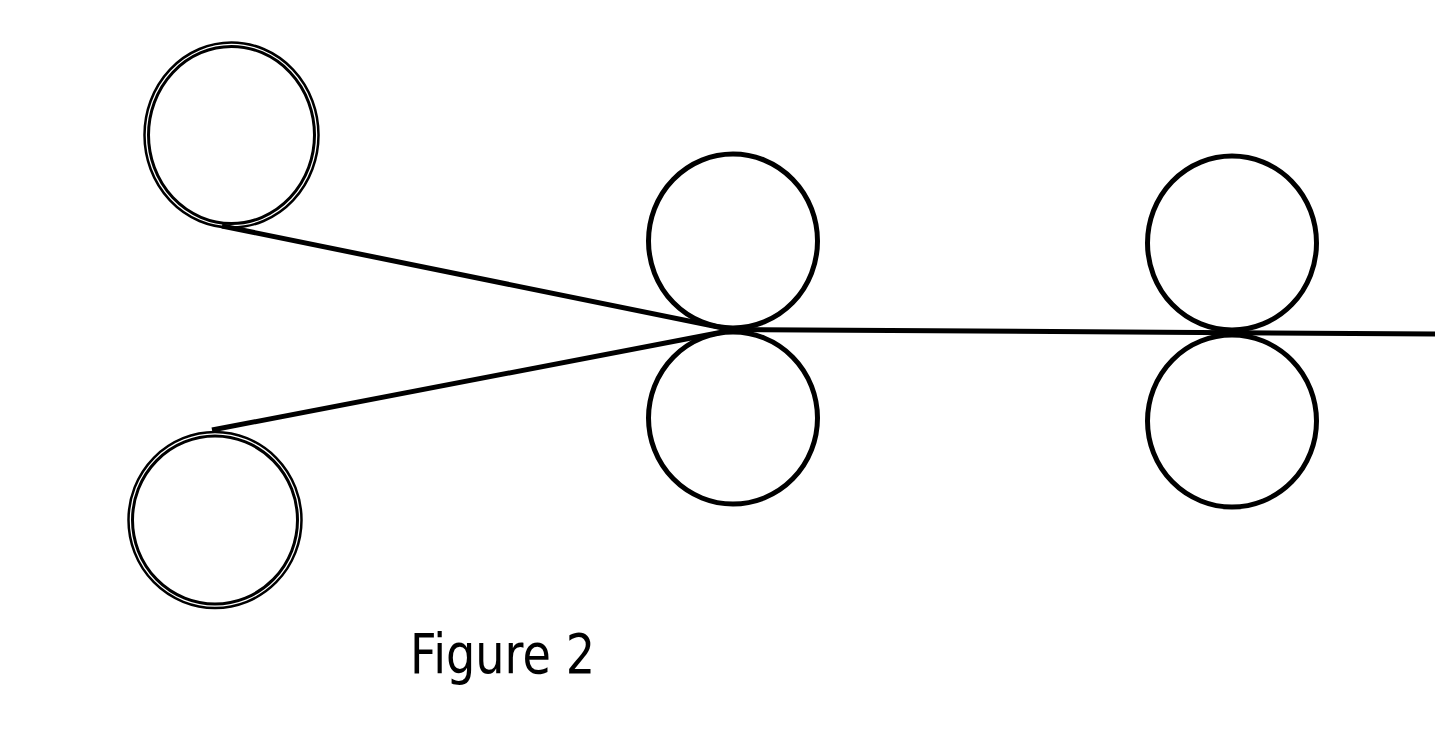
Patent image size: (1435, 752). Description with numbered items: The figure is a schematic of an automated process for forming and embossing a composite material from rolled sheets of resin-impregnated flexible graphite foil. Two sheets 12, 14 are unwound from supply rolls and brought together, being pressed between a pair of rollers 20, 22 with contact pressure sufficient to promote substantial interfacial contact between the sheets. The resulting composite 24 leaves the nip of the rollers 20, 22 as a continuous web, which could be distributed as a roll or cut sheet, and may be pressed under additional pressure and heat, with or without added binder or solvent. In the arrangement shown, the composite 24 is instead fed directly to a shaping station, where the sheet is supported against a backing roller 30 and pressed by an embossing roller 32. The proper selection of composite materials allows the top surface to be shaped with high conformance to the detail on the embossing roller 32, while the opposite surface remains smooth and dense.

The sheet 12 is at (335, 243).
The sheet 14 is at (547, 372).
The roller 20 is at (756, 228).
The roller 22 is at (756, 408).
The composite 24 is at (852, 328).
The backing roller 30 is at (1255, 411).
The embossing roller 32 is at (1255, 231).